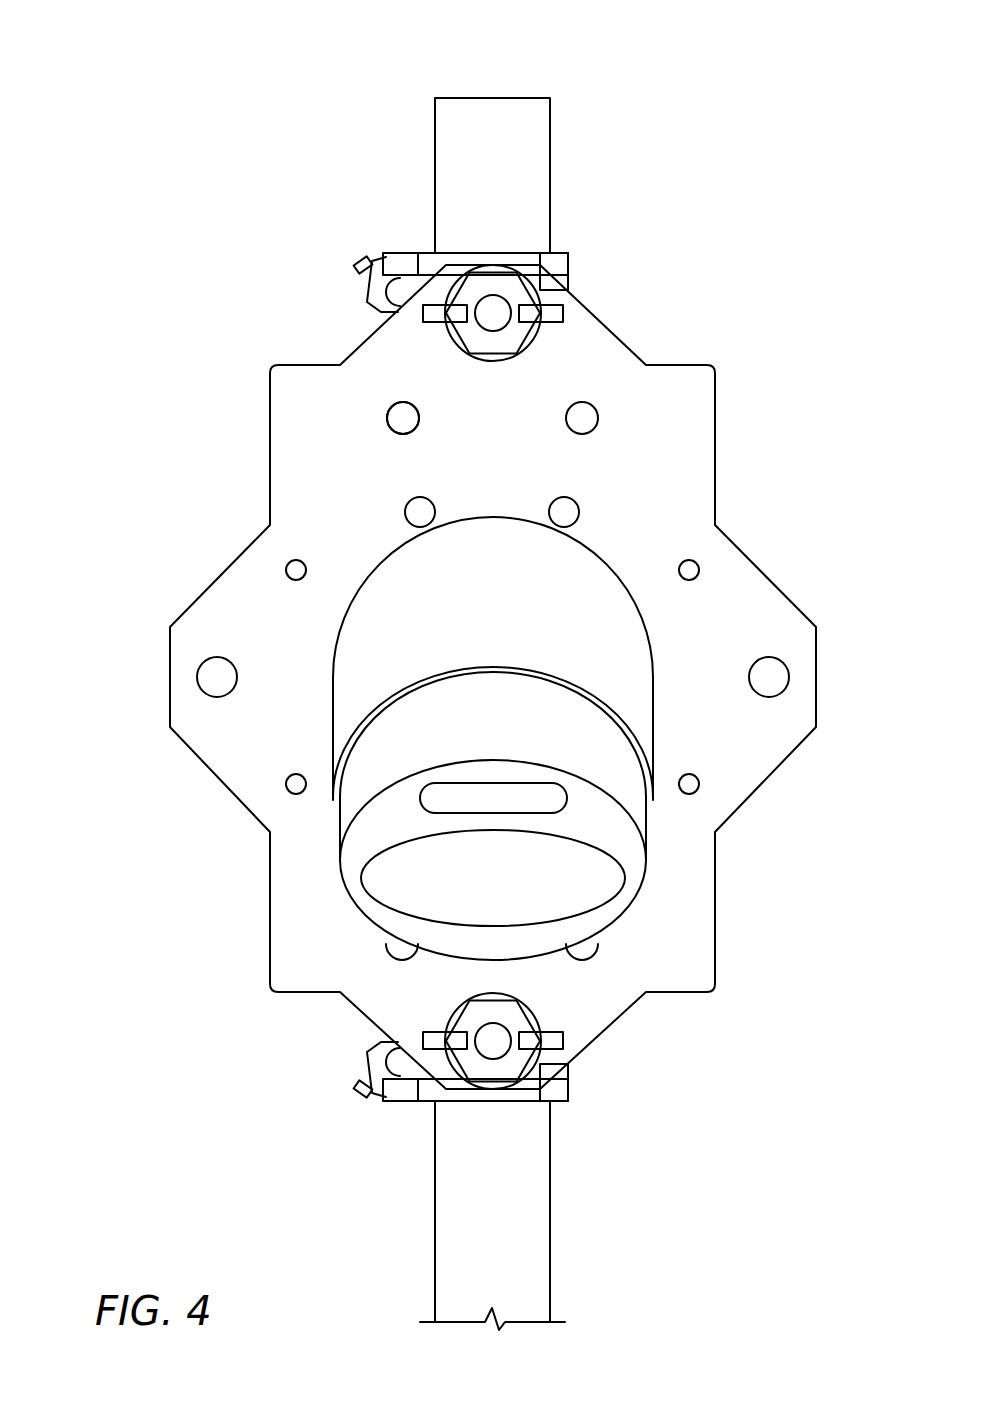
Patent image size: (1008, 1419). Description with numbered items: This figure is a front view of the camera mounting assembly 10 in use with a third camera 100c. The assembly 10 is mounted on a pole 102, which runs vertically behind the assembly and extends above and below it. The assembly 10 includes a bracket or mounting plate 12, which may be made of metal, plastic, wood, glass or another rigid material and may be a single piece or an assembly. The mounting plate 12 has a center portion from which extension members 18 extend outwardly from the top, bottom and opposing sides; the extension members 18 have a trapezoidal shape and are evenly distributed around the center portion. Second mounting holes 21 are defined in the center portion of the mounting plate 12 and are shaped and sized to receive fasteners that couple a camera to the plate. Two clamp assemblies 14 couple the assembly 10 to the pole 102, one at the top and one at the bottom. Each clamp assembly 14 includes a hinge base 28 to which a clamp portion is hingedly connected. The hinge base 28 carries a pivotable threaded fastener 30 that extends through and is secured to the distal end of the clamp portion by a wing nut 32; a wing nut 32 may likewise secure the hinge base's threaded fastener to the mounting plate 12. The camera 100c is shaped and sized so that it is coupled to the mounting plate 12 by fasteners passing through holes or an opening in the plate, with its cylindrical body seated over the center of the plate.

The camera mounting assembly 10 is at (491, 607).
The mounting plate 12 is at (722, 775).
The clamp assembly 14 is at (491, 244).
The extension member 18 is at (767, 577).
The second mounting hole 21 is at (386, 426).
The hinge base 28 is at (583, 258).
The pivotable threaded fastener 30 is at (493, 312).
The wing nut 32 is at (548, 315).
The third camera 100c is at (330, 678).
The pole 102 is at (522, 123).